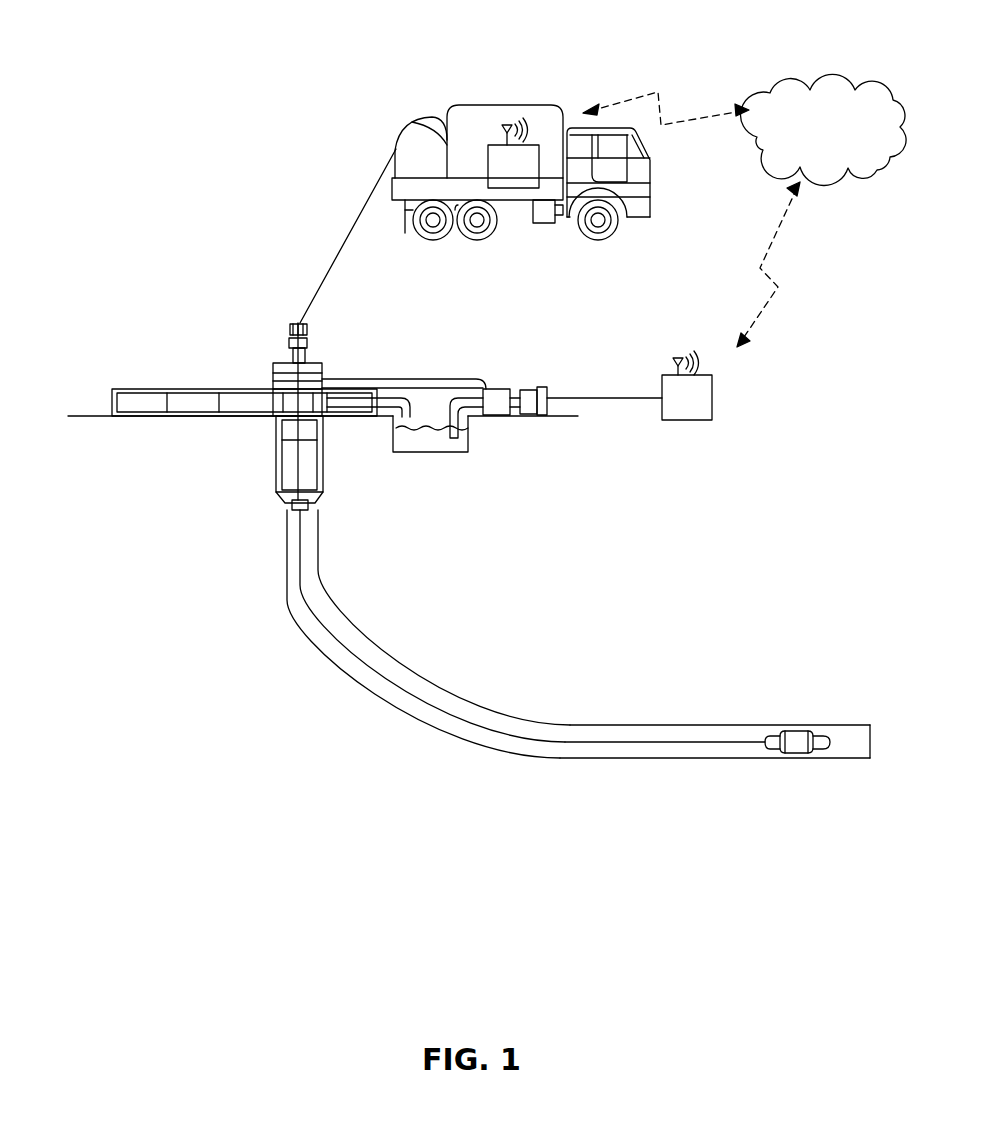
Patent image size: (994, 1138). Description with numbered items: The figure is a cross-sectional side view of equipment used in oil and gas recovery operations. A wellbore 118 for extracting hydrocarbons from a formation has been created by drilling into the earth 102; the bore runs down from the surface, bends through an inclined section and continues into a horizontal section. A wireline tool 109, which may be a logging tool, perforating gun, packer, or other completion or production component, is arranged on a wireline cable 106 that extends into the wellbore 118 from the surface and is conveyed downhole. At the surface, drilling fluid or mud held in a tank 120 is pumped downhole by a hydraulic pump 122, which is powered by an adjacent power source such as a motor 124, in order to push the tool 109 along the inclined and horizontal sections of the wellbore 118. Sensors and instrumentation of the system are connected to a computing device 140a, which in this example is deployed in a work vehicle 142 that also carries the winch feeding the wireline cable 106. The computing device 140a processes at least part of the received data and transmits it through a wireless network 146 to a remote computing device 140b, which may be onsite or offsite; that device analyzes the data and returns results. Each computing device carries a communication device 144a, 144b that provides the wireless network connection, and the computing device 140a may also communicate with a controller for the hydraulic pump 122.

The earth 102 is at (101, 466).
The wireline cable 106 is at (300, 576).
The wireline tool 109 is at (793, 728).
The wellbore 118 is at (572, 762).
The tank 120 is at (437, 443).
The hydraulic pump 122 is at (503, 391).
The motor 124 is at (528, 414).
The computing device 140a is at (488, 168).
The remote computing device 140b is at (661, 377).
The work vehicle 142 is at (652, 203).
The communication device 144a is at (507, 124).
The communication device 144b is at (684, 355).
The network 146 is at (848, 141).